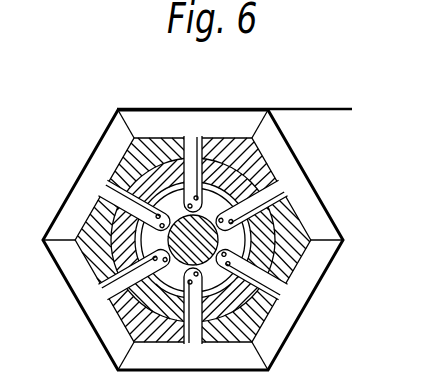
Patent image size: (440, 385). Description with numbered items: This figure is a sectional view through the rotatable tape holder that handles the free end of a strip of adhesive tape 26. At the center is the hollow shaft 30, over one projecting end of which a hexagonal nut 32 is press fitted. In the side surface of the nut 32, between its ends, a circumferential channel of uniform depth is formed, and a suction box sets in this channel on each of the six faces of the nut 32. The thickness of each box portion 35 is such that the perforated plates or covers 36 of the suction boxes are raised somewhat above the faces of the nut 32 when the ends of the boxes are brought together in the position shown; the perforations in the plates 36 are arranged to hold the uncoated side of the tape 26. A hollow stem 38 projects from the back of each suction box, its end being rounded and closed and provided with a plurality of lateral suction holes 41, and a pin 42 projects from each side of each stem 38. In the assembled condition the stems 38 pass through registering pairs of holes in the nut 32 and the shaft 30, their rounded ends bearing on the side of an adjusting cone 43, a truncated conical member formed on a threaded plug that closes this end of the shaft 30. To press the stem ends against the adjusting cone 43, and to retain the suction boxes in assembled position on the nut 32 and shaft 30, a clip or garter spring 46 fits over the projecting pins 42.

The strip of adhesive tape 26 is at (326, 108).
The hollow shaft 30 is at (265, 165).
The hexagonal nut 32 is at (288, 267).
The box portion 35 is at (263, 352).
The perforated plate 36 is at (218, 240).
The hollow stem 38 is at (136, 142).
The lateral suction hole 41 is at (268, 286).
The pin 42 is at (98, 205).
The adjusting cone 43 is at (115, 307).
The garter spring 46 is at (108, 262).